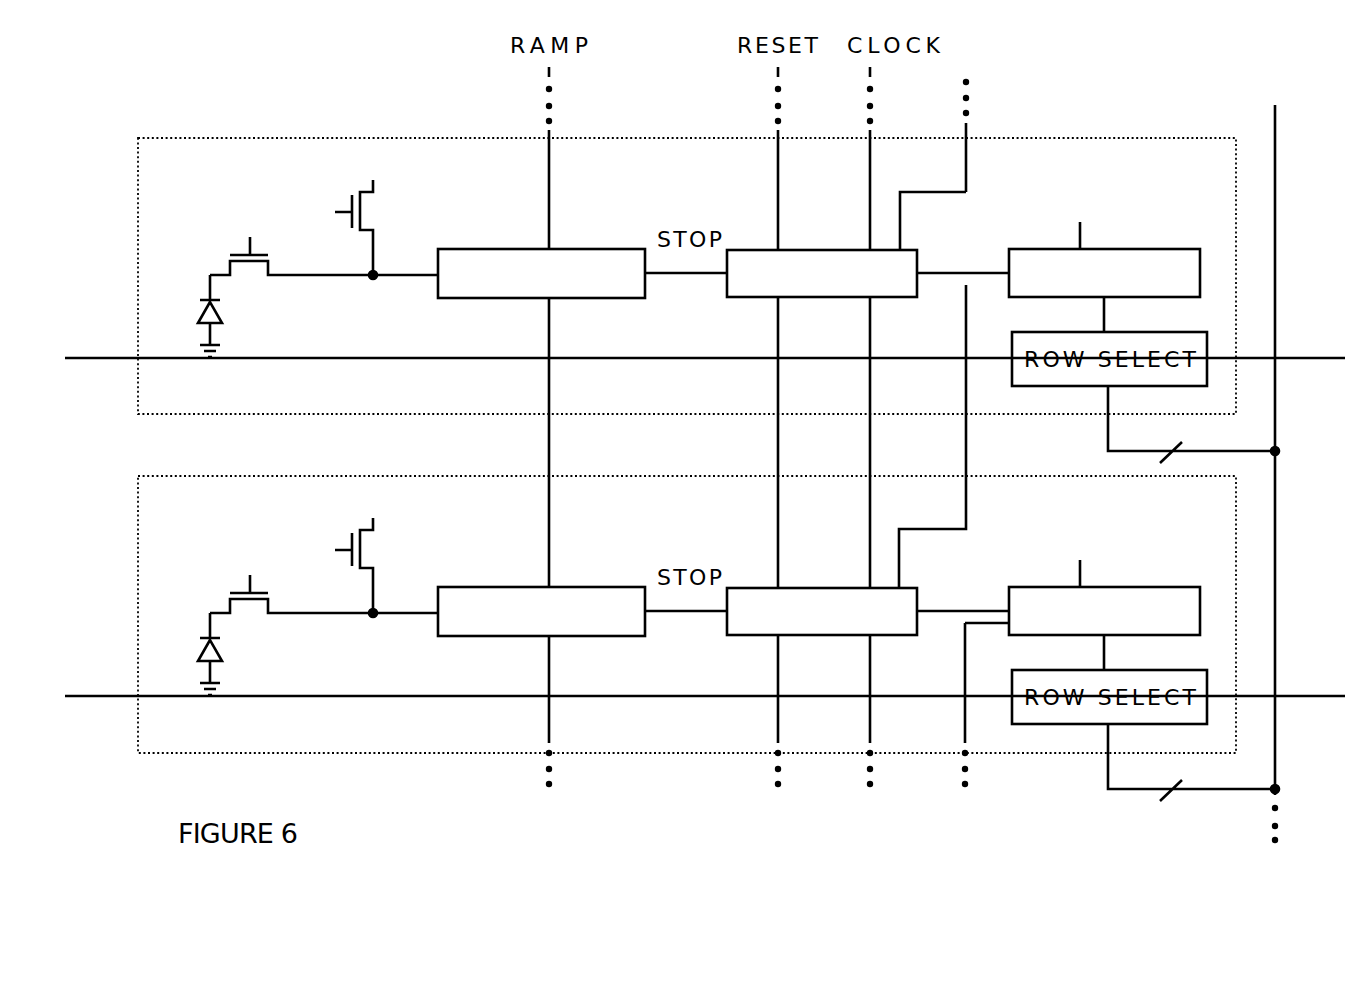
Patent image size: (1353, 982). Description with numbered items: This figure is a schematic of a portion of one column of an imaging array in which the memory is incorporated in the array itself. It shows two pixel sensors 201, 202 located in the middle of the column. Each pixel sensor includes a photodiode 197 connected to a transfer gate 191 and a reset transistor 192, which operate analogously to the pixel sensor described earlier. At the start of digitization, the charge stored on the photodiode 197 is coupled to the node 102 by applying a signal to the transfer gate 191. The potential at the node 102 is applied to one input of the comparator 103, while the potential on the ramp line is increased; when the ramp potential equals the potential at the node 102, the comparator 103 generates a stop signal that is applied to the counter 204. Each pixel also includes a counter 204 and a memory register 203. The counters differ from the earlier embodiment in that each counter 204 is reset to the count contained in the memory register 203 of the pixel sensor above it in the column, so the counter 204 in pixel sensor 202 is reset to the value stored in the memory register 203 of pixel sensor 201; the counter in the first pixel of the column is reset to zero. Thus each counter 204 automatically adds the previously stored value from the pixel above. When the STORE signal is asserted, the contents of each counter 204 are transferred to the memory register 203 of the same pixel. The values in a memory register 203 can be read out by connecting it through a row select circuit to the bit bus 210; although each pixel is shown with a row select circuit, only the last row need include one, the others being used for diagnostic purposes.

The node 102 is at (397, 274).
The comparator 103 is at (518, 294).
The transfer gate 191 is at (246, 250).
The reset transistor 192 is at (351, 222).
The photodiode 197 is at (216, 302).
The pixel sensor 201 is at (140, 207).
The pixel sensor 202 is at (140, 545).
The memory register 203 is at (1140, 248).
The counter 204 is at (774, 298).
The bit bus 210 is at (1272, 183).